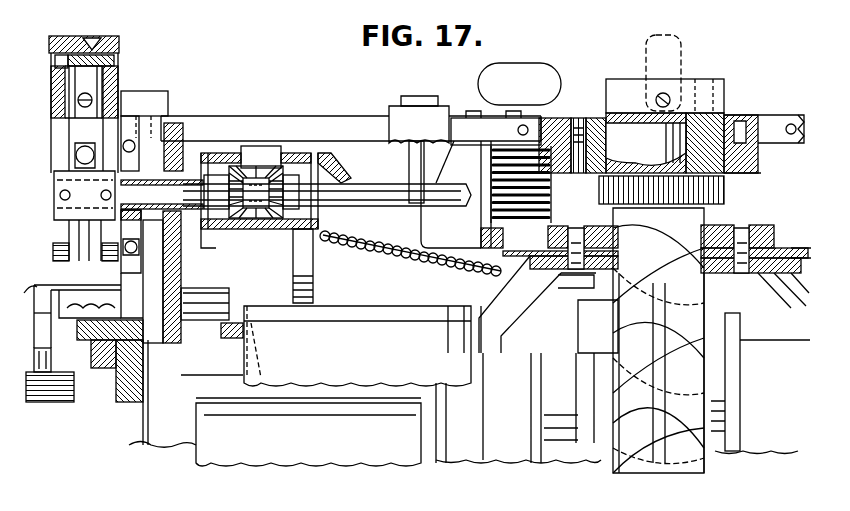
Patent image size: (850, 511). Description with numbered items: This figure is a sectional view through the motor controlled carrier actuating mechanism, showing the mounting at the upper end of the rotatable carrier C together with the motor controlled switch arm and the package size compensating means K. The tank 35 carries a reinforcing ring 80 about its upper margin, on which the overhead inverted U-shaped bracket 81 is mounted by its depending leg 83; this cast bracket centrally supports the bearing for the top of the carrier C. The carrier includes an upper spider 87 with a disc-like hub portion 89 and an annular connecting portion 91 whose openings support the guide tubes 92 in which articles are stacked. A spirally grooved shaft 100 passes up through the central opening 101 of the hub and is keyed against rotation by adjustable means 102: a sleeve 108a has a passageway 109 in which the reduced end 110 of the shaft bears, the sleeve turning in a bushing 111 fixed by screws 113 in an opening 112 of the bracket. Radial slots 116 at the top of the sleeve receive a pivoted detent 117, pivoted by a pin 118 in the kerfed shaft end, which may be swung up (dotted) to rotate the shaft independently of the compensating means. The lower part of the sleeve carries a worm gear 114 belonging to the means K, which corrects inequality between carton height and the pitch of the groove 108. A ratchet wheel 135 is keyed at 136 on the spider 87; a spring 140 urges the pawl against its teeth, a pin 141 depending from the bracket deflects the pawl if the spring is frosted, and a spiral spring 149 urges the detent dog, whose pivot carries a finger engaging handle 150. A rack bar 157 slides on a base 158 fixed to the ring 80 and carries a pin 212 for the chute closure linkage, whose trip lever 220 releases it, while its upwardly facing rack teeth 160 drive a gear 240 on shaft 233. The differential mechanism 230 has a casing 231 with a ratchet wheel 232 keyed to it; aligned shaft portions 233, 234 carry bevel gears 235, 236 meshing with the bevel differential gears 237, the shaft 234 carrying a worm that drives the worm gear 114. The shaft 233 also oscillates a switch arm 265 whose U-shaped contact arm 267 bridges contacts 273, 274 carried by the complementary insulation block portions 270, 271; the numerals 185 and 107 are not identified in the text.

The insulation block portion 271 is at (48, 36).
The insulation block portion 270 is at (112, 48).
The contact 273 is at (110, 88).
The contact 274 is at (66, 97).
The contact arm 267 is at (76, 105).
The switch arm 265 is at (82, 130).
The gear 240 is at (165, 135).
The ratchet wheel 232 is at (222, 150).
The shaft portion 233 is at (235, 232).
The differential mechanism 230 is at (250, 163).
The bevel gear 235 is at (250, 170).
The casing 231 is at (280, 163).
The bevel differential gears 237 is at (258, 174).
The bevel gear 236 is at (302, 170).
The shaft portion 234 is at (358, 185).
The pin 141 is at (408, 180).
The bracket 81 is at (335, 120).
The upper spider 87 is at (390, 120).
The spring 140 is at (418, 262).
The rack teeth 160 is at (195, 270).
The leg 83 is at (128, 275).
The pin 212 is at (72, 307).
The spring seat 185 is at (90, 304).
The trip lever 220 is at (58, 360).
The base 158 is at (112, 380).
The reinforcing ring 80 is at (133, 406).
The tank 35 is at (148, 449).
The rack bar 157 is at (180, 335).
The container 107 is at (333, 386).
The annular connecting portion 91 is at (250, 335).
The guide tubes 92 is at (258, 364).
The spiral spring 149 is at (503, 145).
The finger engaging handle 150 is at (538, 72).
The passageway 109 is at (597, 117).
The sleeve 108a is at (612, 105).
The radial slots 116 is at (615, 100).
The pin 118 is at (662, 90).
The pivoted detent 117 is at (693, 96).
The adjustable means 102 is at (734, 84).
The reduced end 110 is at (646, 143).
The bushing 111 is at (745, 140).
The opening 112 is at (752, 170).
The screws 113 is at (740, 118).
The worm gear 114 is at (596, 186).
The keying 136 is at (575, 220).
The ratchet wheel 135 is at (780, 242).
The hub portion 89 is at (760, 270).
The central opening 101 is at (626, 255).
The groove 108 is at (660, 362).
The spirally grooved shaft 100 is at (700, 462).
The compensating means K is at (376, 212).
The carrier C is at (440, 462).